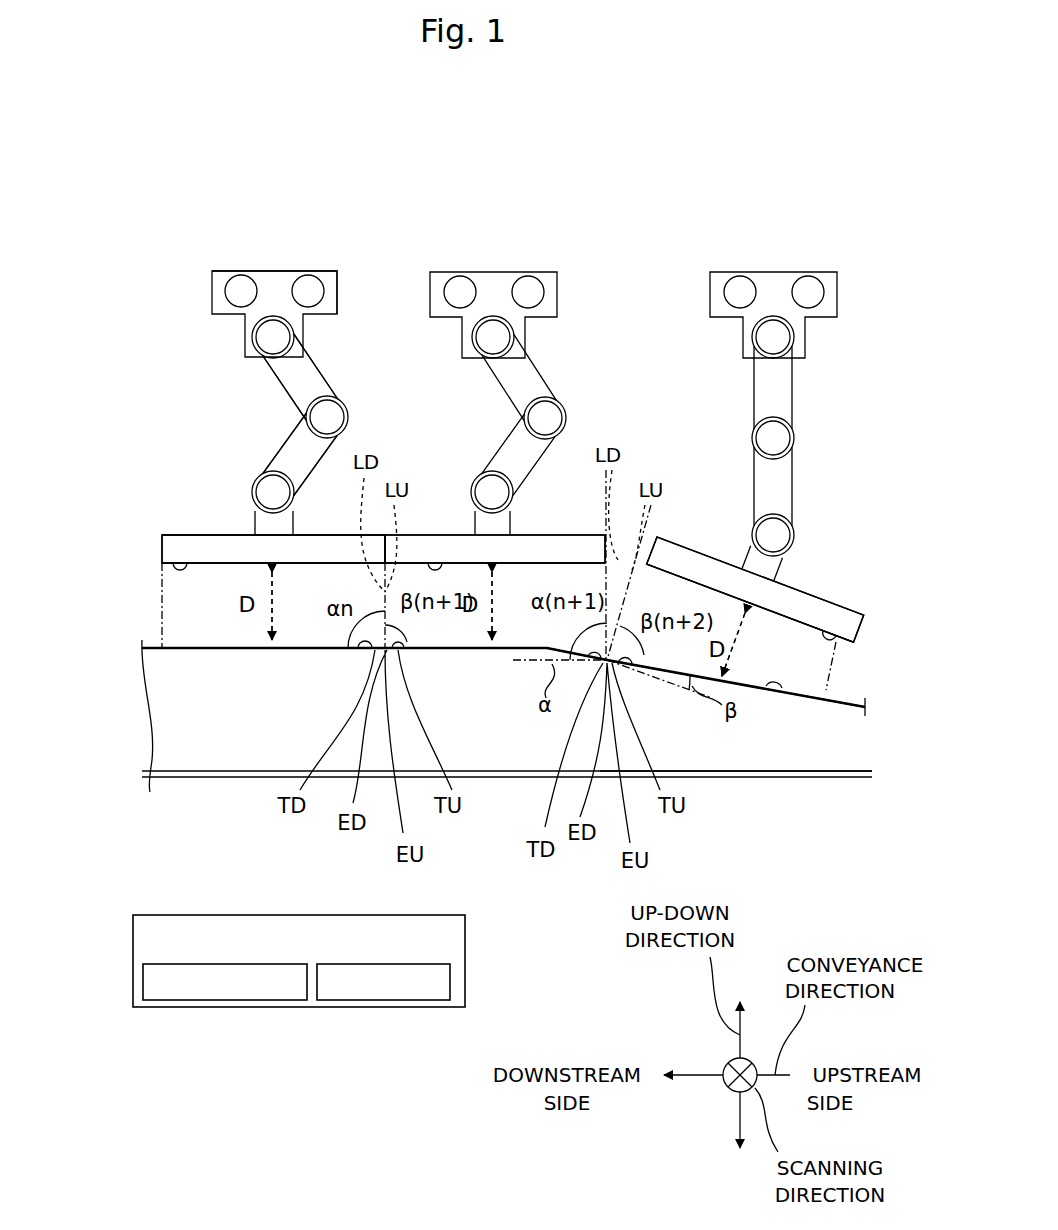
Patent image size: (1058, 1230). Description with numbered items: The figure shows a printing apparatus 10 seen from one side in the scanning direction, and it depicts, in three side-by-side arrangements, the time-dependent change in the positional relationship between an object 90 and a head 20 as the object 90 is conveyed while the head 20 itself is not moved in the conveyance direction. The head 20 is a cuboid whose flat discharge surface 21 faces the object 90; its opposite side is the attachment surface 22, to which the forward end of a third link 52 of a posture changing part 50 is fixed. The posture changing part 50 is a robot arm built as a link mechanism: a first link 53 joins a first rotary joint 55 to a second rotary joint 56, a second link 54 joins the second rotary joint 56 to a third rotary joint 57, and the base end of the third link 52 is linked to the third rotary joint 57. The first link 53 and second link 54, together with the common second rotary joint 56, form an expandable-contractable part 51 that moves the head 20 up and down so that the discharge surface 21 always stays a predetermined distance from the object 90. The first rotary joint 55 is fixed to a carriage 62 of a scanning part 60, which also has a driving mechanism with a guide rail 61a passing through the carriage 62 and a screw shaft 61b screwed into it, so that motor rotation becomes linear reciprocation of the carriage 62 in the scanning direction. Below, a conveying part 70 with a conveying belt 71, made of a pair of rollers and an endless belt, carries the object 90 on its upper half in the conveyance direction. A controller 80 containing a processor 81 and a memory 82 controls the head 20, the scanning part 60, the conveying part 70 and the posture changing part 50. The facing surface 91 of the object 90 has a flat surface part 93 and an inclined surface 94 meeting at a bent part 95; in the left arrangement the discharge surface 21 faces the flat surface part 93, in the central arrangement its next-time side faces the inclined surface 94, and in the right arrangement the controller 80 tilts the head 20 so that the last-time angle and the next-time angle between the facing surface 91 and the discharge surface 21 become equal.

The printing apparatus 10 is at (494, 190).
The head 20 is at (210, 550).
The discharge surface 21 is at (150, 562).
The upper surface of head 22 is at (167, 533).
The posture changing part 50 is at (332, 360).
The expandable-contractable part 51 is at (290, 420).
The third link 52 is at (272, 522).
The first link 53 is at (296, 378).
The second link 54 is at (330, 456).
The first rotary joint 55 is at (264, 334).
The second rotary joint 56 is at (330, 416).
The third rotary joint 57 is at (272, 490).
The scanning part 60 is at (290, 262).
The guide rail 61a is at (305, 288).
The screw shaft 61b is at (241, 288).
The carriage 62 is at (222, 280).
The conveying part 70 is at (222, 788).
The conveying belt 71 is at (750, 779).
The controller 80 is at (133, 946).
The processor 81 is at (183, 1001).
The memory 82 is at (432, 1001).
The object 90 is at (182, 738).
The facing surface 91 is at (166, 647).
The flat surface part 93 is at (477, 651).
The inclined surface 94 is at (780, 691).
The bent portion of sheet 95 is at (527, 651).